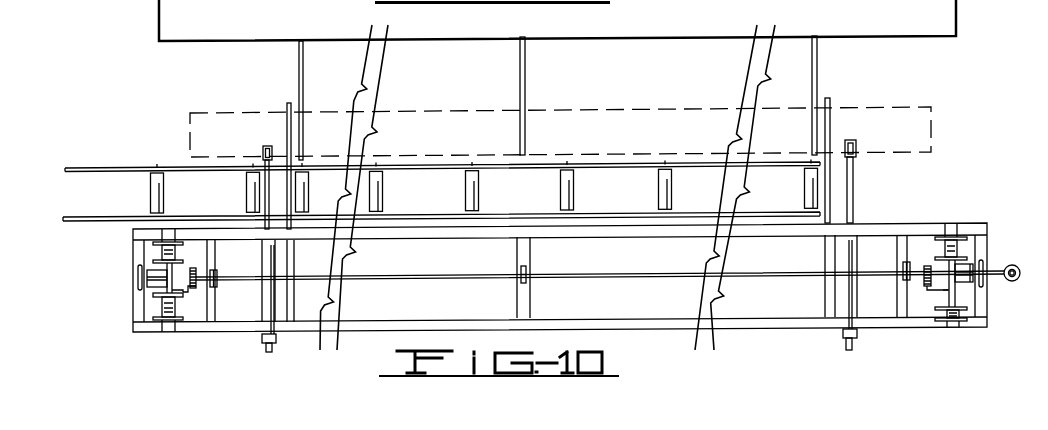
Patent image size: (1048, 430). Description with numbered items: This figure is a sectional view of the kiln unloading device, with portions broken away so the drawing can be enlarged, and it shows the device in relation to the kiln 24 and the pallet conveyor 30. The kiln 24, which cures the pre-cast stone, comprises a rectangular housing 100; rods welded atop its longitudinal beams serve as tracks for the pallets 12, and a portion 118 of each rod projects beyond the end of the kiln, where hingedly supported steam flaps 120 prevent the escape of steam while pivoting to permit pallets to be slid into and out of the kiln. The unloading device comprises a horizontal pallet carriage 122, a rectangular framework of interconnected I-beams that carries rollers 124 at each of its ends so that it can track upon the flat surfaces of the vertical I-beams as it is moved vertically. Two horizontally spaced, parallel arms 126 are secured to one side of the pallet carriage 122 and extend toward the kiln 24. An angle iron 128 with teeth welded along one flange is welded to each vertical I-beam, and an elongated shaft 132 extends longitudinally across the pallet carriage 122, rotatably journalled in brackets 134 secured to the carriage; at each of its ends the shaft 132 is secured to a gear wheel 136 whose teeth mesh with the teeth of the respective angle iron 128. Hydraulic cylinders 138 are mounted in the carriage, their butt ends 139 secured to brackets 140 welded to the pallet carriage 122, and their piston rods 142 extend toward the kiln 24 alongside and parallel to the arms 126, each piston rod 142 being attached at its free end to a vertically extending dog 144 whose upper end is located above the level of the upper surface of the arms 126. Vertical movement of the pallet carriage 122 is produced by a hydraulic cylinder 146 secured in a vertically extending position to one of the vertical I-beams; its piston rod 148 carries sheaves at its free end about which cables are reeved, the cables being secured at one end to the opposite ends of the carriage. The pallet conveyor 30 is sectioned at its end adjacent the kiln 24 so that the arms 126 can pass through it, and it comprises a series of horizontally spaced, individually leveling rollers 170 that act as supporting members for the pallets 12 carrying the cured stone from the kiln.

The pallet 12 is at (632, 140).
The kiln 24 is at (690, 26).
The pallet conveyor 30 is at (85, 163).
The rectangular housing 100 is at (158, 30).
The projecting portion of rod 118 is at (306, 72).
The steam flap 120 is at (152, 262).
The pallet carriage 122 is at (891, 217).
The roller 124 is at (172, 253).
The arm 126 is at (288, 103).
The angle iron 128 is at (192, 292).
The elongated shaft 132 is at (595, 275).
The bracket 134 is at (218, 279).
The gear wheel 136 is at (193, 269).
The hydraulic cylinder 138 is at (269, 303).
The butt end 139 is at (262, 340).
The bracket 140 is at (268, 348).
The piston rod 142 is at (264, 162).
The dog 144 is at (267, 146).
The hydraulic cylinder 146 is at (1025, 262).
The piston rod 148 is at (1023, 282).
The leveling roller 170 is at (151, 190).